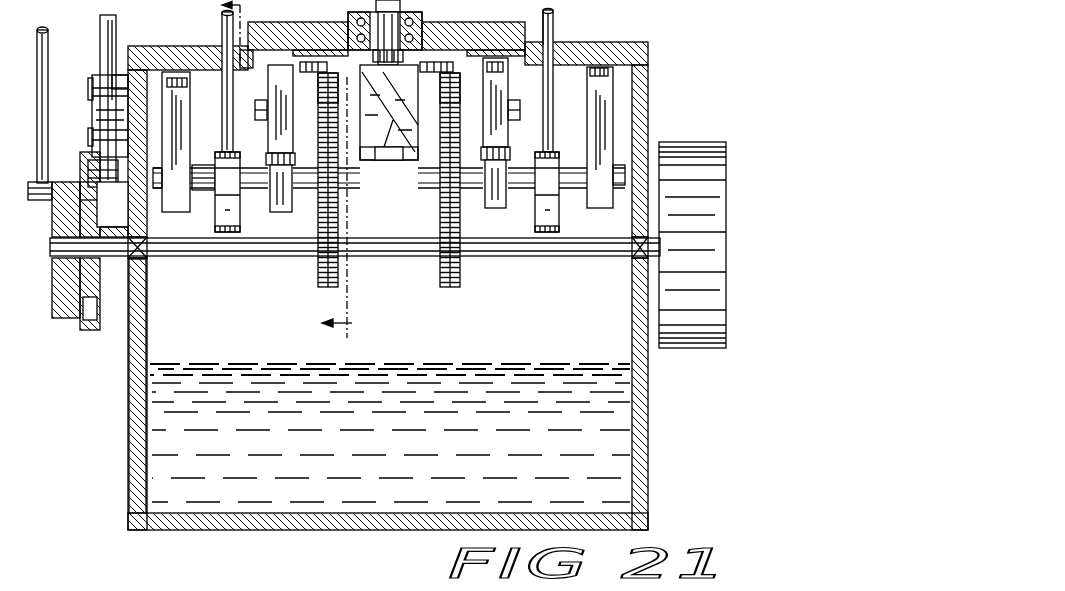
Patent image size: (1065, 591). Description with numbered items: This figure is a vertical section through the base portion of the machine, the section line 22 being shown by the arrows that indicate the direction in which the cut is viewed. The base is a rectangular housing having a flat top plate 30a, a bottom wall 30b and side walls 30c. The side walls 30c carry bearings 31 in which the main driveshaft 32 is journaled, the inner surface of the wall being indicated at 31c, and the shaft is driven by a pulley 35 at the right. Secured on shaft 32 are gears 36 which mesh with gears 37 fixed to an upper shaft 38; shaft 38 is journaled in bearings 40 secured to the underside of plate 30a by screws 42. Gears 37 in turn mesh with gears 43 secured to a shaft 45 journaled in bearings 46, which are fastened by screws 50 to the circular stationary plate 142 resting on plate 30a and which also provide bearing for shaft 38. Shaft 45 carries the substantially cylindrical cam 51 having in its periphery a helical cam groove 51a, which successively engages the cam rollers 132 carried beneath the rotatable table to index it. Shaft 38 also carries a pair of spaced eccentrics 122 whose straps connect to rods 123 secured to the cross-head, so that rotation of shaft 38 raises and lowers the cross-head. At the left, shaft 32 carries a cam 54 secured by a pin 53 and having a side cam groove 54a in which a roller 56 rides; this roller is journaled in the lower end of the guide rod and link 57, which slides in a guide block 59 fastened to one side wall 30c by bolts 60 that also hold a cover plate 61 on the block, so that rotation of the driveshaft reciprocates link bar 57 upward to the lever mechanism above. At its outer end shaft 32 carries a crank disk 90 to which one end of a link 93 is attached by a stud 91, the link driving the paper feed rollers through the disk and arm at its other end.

The side walls 22 is at (287, 170).
The flat plate 30a is at (152, 48).
The bottom wall 30b is at (515, 513).
The side walls 30c is at (128, 428).
The bearings 31 is at (148, 272).
The housing inner wall surface 31c is at (148, 330).
The main driveshaft 32 is at (543, 252).
The pulley 35 is at (716, 176).
The gears 36 is at (318, 281).
The gears 37 is at (340, 214).
The shaft 38 is at (203, 190).
The bearings 40 is at (180, 132).
The screws 42 is at (182, 85).
The gears 43 is at (318, 84).
The shaft 45 is at (256, 116).
The bearings 46 is at (268, 92).
The screws 50 is at (372, 47).
The cam 51 is at (410, 112).
The helical cam groove 51a is at (374, 160).
The pin 53 is at (113, 238).
The cam 54 is at (88, 286).
The cam groove 54a is at (95, 320).
The roller 56 is at (82, 162).
The guide rod and link 57 is at (100, 44).
The guide block 59 is at (122, 75).
The bolts 60 is at (93, 80).
The cover plate 61 is at (92, 100).
The crank disk 90 is at (52, 282).
The stud 91 is at (32, 204).
The link 93 is at (46, 40).
The eccentrics 122 is at (232, 212).
The rods 123 is at (222, 32).
The cam rollers 132 is at (432, 38).
The stationary plate 142 is at (545, 34).